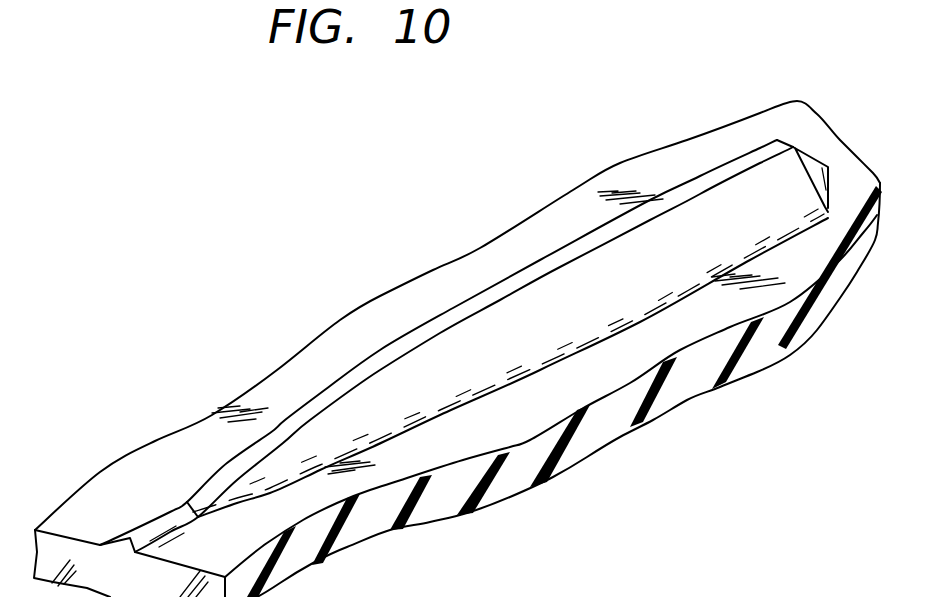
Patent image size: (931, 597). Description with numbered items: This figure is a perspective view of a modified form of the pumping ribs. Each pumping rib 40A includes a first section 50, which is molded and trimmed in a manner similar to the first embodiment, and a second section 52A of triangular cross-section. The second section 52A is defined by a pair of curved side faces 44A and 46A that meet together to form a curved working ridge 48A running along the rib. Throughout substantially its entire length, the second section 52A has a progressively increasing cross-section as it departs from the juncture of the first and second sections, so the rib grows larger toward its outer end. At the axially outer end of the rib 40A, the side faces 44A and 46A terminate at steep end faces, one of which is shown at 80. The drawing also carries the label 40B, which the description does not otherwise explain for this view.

The pumping rib 40A is at (685, 162).
The second member 40B is at (564, 390).
The curved side face 44A is at (583, 240).
The curved side face 46A is at (665, 283).
The curved working ridge 48A is at (463, 320).
The first section 50 is at (147, 495).
The second section 52A is at (515, 407).
The steep end face 80 is at (818, 167).